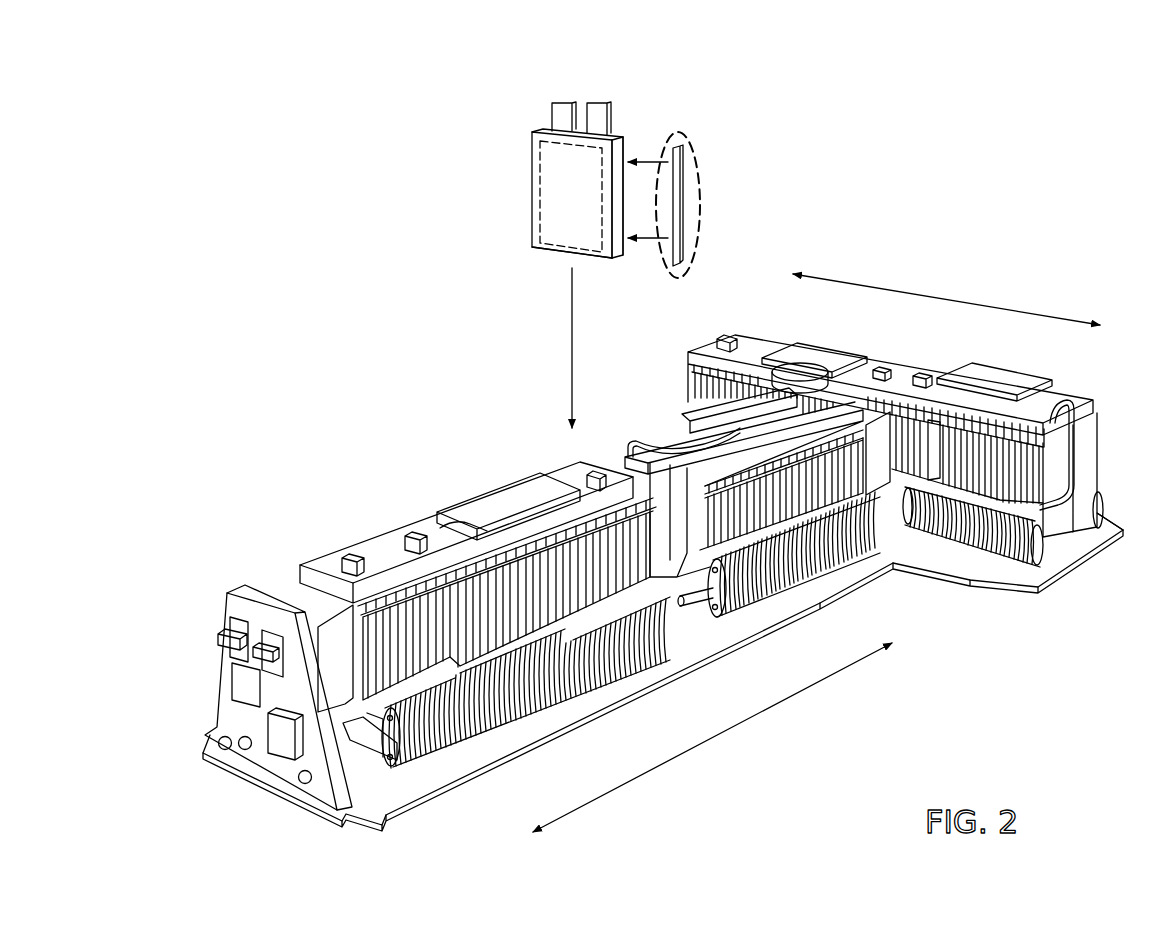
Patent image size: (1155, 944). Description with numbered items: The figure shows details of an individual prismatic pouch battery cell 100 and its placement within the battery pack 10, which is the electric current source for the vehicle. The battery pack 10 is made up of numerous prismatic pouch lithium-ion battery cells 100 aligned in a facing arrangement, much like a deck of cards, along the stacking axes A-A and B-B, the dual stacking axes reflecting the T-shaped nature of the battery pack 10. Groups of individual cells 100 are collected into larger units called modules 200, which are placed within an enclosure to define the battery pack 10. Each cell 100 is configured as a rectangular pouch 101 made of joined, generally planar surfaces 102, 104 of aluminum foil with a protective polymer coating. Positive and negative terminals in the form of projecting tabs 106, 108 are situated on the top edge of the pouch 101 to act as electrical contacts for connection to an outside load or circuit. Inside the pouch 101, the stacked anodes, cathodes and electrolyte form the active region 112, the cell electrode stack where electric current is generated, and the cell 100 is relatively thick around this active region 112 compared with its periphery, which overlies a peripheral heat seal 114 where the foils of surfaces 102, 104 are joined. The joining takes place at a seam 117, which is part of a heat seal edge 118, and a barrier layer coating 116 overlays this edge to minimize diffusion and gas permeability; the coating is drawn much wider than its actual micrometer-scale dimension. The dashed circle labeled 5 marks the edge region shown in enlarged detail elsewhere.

The battery pack 10 is at (276, 372).
The battery cell 100 is at (467, 130).
The pouch 101 is at (540, 113).
The planar surface 102 is at (587, 202).
The planar surface 104 is at (634, 147).
The tab 106 is at (598, 103).
The tab 108 is at (561, 103).
The active region 112 is at (540, 211).
The heat seal 114 is at (562, 251).
The barrier layer coating 116 is at (682, 171).
The seam 117 is at (617, 252).
The heat seal edge 118 is at (617, 252).
The module 200 is at (500, 588).
The detail region (FIG. 5) 5 is at (701, 198).